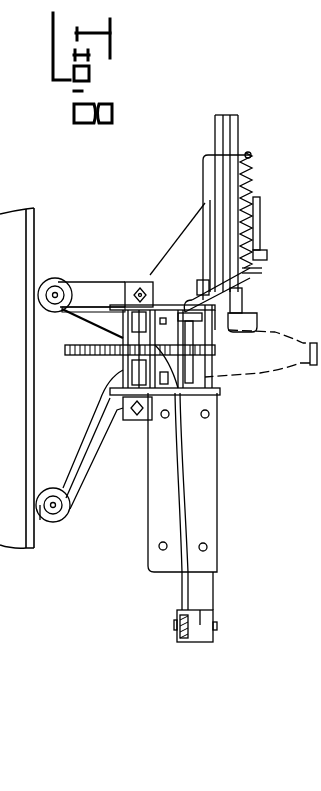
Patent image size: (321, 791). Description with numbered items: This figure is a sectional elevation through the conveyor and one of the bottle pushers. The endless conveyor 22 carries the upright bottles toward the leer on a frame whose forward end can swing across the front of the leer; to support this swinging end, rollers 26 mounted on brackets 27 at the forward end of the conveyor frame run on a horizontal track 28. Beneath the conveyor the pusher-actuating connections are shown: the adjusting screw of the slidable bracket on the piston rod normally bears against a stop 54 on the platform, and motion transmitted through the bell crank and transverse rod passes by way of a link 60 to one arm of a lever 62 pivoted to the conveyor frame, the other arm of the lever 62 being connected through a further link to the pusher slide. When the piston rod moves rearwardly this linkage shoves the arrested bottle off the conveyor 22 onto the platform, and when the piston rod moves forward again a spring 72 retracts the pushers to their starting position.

The endless conveyor 22 is at (292, 364).
The rollers 26 is at (57, 278).
The brackets 27 is at (105, 284).
The horizontal track 28 is at (50, 421).
The stop 54 is at (187, 496).
The link 60 is at (216, 384).
The lever 62 is at (193, 306).
The spring 72 is at (254, 183).